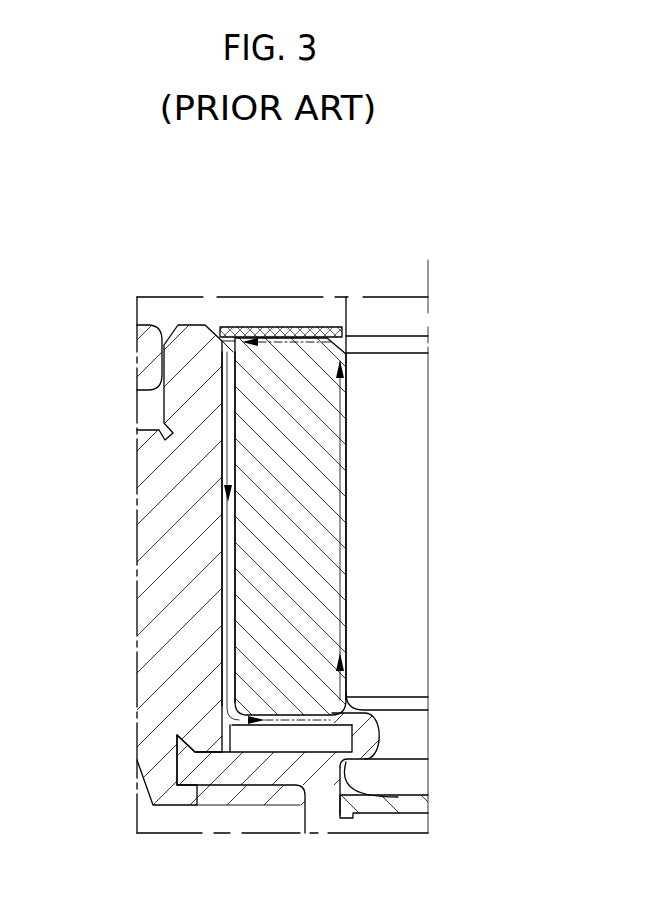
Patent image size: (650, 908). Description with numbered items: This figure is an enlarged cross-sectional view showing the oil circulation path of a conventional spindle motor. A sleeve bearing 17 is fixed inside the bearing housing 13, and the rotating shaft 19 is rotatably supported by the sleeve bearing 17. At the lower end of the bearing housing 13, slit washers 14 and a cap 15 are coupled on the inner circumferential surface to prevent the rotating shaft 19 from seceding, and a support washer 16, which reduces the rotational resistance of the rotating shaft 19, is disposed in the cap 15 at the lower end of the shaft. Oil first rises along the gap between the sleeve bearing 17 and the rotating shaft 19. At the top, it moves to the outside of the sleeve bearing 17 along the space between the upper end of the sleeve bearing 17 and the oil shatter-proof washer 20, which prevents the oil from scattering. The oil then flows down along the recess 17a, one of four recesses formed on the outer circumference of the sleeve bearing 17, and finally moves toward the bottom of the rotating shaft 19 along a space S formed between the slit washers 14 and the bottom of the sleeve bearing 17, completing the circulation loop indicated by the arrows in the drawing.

The bearing housing 13 is at (148, 658).
The slit washers 14 is at (269, 741).
The cap 15 is at (322, 820).
The support washer 16 is at (373, 800).
The sleeve bearing 17 is at (250, 463).
The recess 17a is at (230, 533).
The rotating shaft 19 is at (400, 605).
The oil shatter-proof washer 20 is at (284, 330).
The space S is at (283, 719).